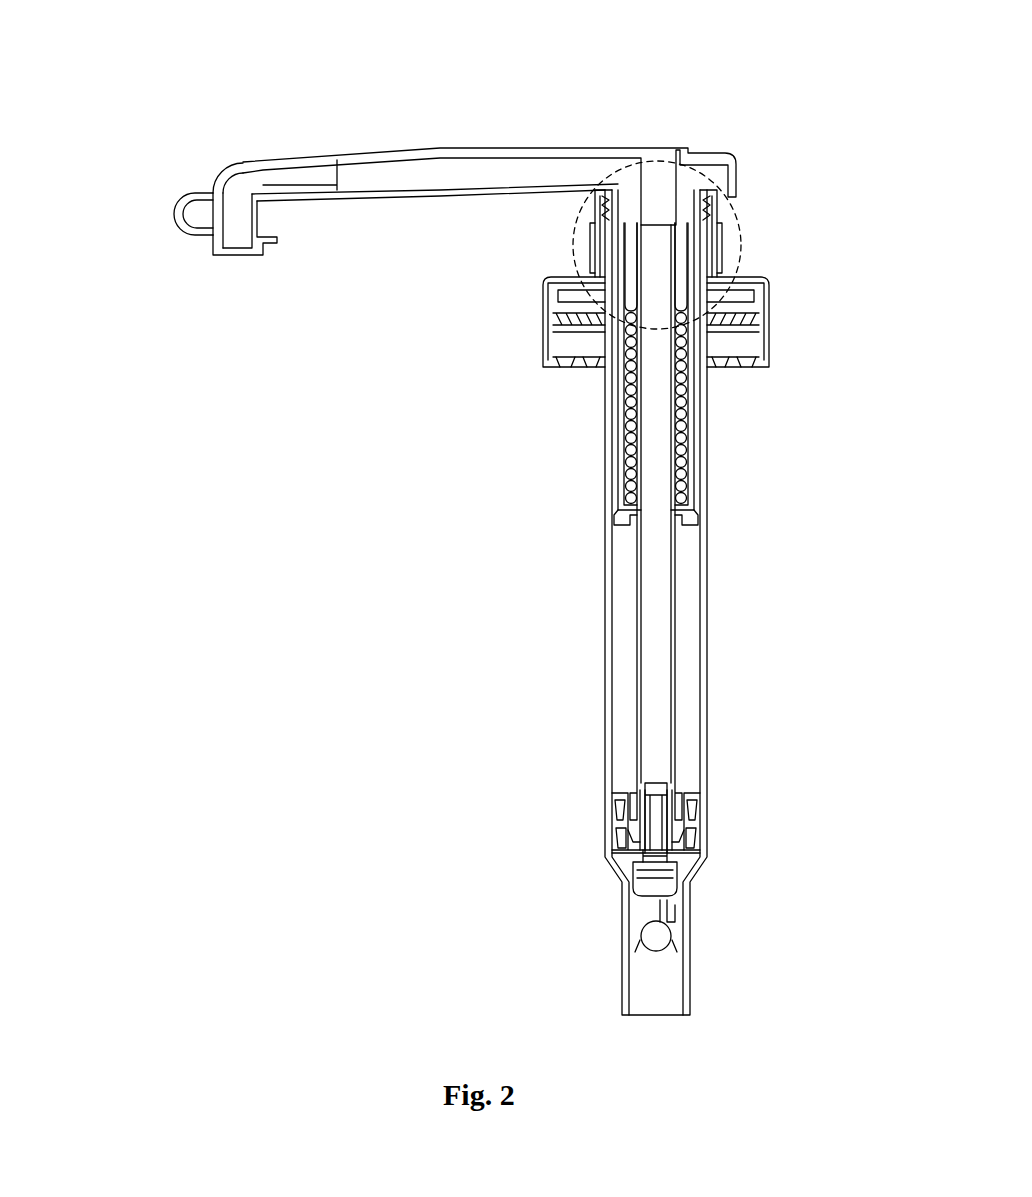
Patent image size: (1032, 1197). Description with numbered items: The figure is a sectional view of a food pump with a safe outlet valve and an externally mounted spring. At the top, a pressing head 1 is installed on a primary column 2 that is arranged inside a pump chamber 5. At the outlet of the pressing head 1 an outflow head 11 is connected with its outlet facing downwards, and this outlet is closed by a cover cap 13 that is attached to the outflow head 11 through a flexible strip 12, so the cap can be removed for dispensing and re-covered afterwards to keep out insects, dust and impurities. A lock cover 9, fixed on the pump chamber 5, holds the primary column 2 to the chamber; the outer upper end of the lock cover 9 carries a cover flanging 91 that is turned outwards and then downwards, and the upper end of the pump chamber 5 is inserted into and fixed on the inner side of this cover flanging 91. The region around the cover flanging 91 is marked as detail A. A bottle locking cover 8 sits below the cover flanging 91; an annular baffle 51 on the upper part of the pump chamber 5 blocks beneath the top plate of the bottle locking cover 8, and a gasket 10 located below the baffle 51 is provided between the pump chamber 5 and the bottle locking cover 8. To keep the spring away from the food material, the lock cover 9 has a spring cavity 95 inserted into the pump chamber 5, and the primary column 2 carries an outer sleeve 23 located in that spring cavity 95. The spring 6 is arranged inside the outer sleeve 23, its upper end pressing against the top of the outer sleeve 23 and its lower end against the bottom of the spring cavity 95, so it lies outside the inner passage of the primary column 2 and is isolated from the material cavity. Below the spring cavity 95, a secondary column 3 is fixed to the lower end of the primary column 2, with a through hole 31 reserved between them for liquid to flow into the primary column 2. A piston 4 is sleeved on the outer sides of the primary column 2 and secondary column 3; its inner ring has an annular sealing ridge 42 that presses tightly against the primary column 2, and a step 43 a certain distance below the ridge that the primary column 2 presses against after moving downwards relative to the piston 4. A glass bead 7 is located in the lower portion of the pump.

The pressing head 1 is at (487, 158).
The outflow head 11 is at (253, 163).
The flexible strip 12 is at (180, 202).
The cover cap 13 is at (237, 252).
The detail region A is at (745, 208).
The cover flanging 91 is at (717, 258).
The primary column 2 is at (672, 645).
The bottle locking cover 8 is at (775, 325).
The annular baffle 51 is at (556, 292).
The gasket 10 is at (578, 300).
The pump chamber 5 is at (707, 560).
The lock cover 9 is at (700, 430).
The outer sleeve 23 is at (618, 464).
The spring cavity 95 is at (615, 405).
The spring 6 is at (690, 462).
The piston 4 is at (697, 830).
The annular sealing ridge 42 is at (637, 800).
The step 43 is at (637, 830).
The secondary column 3 is at (693, 870).
The through hole 31 is at (642, 860).
The glass bead 7 is at (657, 938).